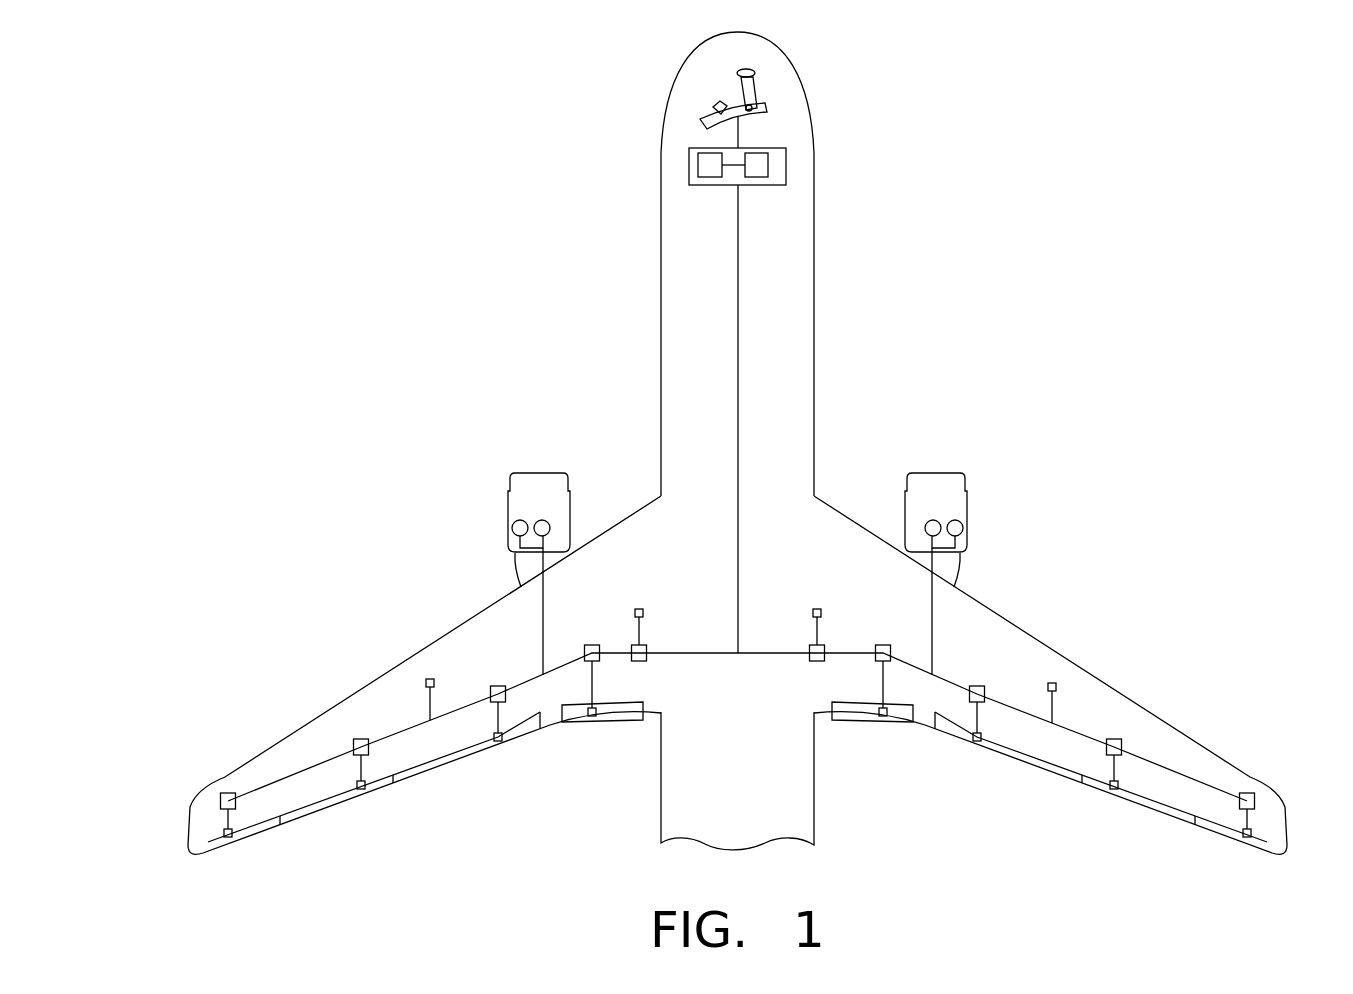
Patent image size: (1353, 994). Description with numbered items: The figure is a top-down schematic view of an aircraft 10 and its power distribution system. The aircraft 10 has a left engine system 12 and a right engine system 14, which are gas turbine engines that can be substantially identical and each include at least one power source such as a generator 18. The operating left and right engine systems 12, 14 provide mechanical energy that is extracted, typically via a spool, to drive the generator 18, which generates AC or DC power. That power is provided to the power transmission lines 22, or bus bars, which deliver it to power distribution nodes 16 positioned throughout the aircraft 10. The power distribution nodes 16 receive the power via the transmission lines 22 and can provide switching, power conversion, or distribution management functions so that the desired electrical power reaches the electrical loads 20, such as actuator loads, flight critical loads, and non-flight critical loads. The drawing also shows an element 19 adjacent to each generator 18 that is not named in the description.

The aircraft 10 is at (444, 253).
The left engine system 12 is at (540, 485).
The right engine system 14 is at (940, 481).
The power distribution node 16 is at (228, 792).
The generator 18 is at (551, 526).
The engine sensor 19 is at (512, 531).
The electrical load 20 is at (712, 185).
The power transmission line 22 is at (737, 312).